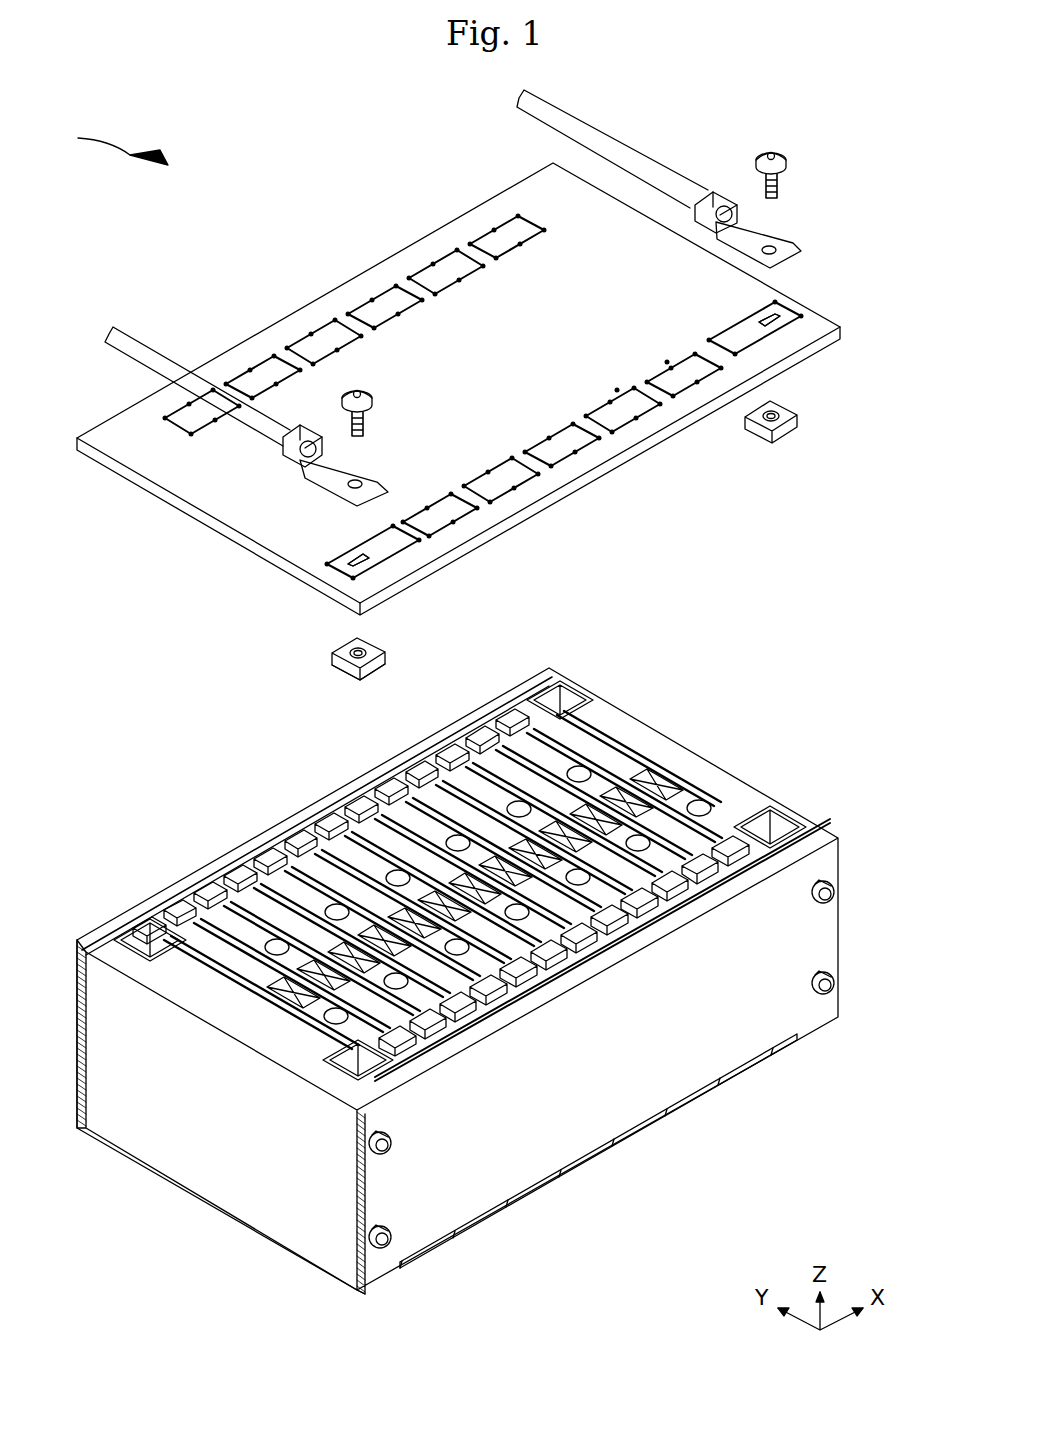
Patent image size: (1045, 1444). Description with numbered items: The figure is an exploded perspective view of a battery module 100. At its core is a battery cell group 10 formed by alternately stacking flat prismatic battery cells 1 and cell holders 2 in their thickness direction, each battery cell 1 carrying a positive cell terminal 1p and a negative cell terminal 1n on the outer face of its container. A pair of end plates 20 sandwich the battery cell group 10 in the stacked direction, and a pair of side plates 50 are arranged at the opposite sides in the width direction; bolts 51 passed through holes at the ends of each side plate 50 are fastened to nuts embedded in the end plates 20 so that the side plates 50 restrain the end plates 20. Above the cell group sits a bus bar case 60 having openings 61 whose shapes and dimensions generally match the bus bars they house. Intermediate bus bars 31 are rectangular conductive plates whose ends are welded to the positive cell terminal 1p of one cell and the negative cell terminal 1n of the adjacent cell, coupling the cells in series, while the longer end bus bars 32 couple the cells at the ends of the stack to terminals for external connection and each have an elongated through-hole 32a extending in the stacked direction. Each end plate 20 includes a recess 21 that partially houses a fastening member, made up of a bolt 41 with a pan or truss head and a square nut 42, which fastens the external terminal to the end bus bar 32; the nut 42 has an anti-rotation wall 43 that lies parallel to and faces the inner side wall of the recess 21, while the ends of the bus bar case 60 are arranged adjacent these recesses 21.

The battery module 100 is at (165, 162).
The battery cell 1 is at (263, 873).
The positive cell terminal 1p is at (210, 897).
The negative cell terminal 1n is at (173, 910).
The cell holder 2 is at (317, 817).
The battery cell group 10 is at (580, 753).
The end plate 20 is at (670, 733).
The recess 21 is at (150, 940).
The intermediate bus bar 31 is at (497, 237).
The end bus bar 32 is at (740, 337).
The elongated through-hole 32a is at (793, 313).
The bolt 41 is at (808, 165).
The nut 42 is at (808, 410).
The anti-rotation wall 43 is at (340, 642).
The side plate 50 is at (77, 938).
The bolt 51 is at (397, 1240).
The bus bar case 60 is at (243, 337).
The opening 61 is at (617, 387).